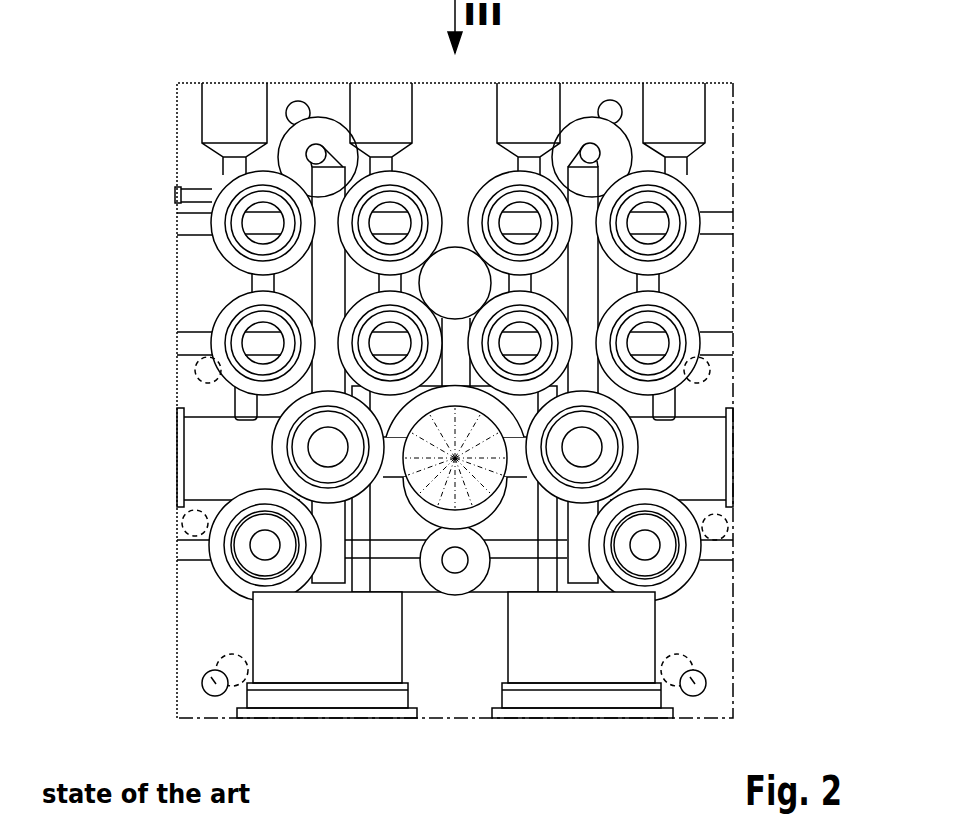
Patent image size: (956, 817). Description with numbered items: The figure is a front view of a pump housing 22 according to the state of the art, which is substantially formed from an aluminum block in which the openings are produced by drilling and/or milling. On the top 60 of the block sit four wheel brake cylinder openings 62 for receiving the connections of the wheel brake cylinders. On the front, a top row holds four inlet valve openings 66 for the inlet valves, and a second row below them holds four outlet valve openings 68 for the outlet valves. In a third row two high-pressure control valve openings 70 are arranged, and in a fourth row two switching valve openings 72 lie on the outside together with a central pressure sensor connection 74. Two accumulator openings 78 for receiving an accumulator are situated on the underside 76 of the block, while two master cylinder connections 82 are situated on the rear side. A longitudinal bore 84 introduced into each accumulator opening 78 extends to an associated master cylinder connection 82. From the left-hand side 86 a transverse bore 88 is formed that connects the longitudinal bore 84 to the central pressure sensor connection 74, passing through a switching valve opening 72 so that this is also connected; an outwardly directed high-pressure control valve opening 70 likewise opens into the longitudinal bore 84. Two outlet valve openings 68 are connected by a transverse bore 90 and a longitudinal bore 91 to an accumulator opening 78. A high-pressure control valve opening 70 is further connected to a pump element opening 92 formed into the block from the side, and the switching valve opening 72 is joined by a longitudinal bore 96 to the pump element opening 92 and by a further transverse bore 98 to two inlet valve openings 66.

The pump housing 22 is at (134, 104).
The top 60 is at (714, 68).
The wheel brake cylinder openings 62 is at (674, 90).
The inlet valve openings 66 is at (505, 210).
The outlet valve openings 68 is at (514, 327).
The high-pressure control valve openings 70 is at (608, 443).
The switching valve openings 72 is at (665, 565).
The pressure sensor connection 74 is at (453, 572).
The underside 76 is at (676, 726).
The accumulator openings 78 is at (594, 698).
The master cylinder connections 82 is at (318, 130).
The longitudinal bore 84 is at (332, 572).
The left-hand side 86 is at (168, 635).
The transverse bore 88 is at (215, 555).
The transverse bore 90 is at (185, 345).
The longitudinal bore 91 is at (362, 580).
The pump element opening 92 is at (705, 462).
The longitudinal bore 96 is at (242, 400).
The transverse bore 98 is at (197, 192).